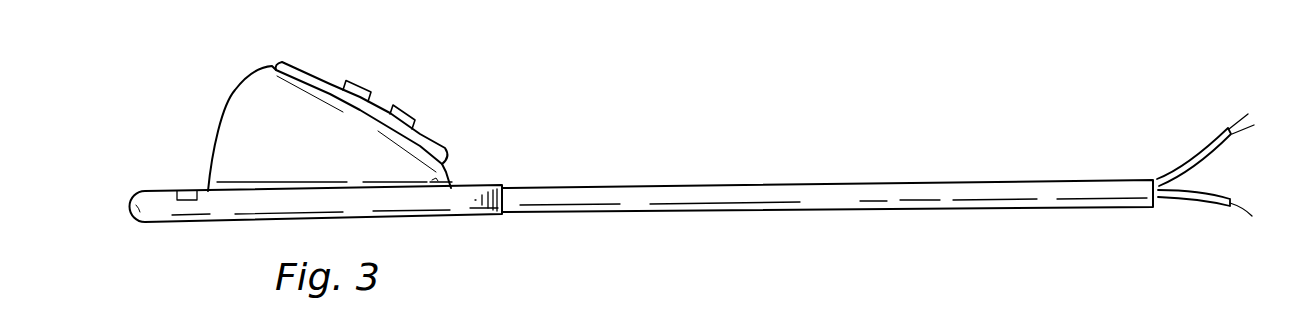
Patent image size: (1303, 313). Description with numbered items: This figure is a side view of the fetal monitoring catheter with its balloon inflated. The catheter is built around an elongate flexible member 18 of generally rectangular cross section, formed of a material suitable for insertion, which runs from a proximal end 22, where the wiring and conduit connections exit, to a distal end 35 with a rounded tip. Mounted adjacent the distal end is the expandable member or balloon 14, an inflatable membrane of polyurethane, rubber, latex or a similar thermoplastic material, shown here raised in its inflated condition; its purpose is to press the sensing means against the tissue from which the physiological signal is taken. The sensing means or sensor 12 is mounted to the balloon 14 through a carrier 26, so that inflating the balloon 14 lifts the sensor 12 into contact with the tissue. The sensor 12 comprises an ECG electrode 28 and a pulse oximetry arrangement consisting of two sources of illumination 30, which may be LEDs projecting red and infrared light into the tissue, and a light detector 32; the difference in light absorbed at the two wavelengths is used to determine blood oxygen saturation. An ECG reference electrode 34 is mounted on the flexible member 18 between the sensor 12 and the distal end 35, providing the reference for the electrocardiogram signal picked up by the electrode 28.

The sensing means or sensor 12 is at (347, 58).
The expandable member or balloon 14 is at (240, 86).
The flexible member 18 is at (926, 182).
The proximal end 22 is at (1134, 180).
The carrier 26 is at (447, 149).
The ECG electrode 28 is at (365, 88).
The sources of illumination 30 is at (289, 62).
The light detector 32 is at (410, 117).
The ECG reference electrode 34 is at (187, 188).
The distal end 35 is at (203, 222).